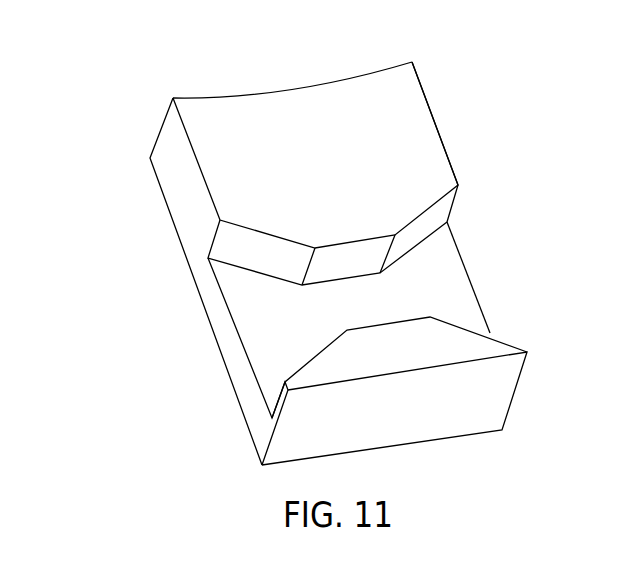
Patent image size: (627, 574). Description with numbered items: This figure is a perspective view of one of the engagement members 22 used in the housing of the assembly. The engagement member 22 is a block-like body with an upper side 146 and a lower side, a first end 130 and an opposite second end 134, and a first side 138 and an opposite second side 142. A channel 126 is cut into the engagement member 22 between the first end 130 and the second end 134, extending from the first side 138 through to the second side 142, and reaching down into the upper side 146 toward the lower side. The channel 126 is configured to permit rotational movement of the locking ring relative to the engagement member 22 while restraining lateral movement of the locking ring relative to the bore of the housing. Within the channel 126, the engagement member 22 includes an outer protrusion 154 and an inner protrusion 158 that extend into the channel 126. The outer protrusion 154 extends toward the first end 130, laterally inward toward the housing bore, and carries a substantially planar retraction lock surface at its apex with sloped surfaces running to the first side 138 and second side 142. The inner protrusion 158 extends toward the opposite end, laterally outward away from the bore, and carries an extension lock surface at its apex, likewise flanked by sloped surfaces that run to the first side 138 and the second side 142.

The engagement member 22 is at (315, 257).
The first end 130 is at (273, 93).
The upper side 146 is at (338, 180).
The first side 138 is at (452, 163).
The inner protrusion 158 is at (258, 287).
The second side 142 is at (175, 207).
The channel 126 is at (450, 275).
The outer protrusion 154 is at (277, 363).
The second end 134 is at (397, 417).